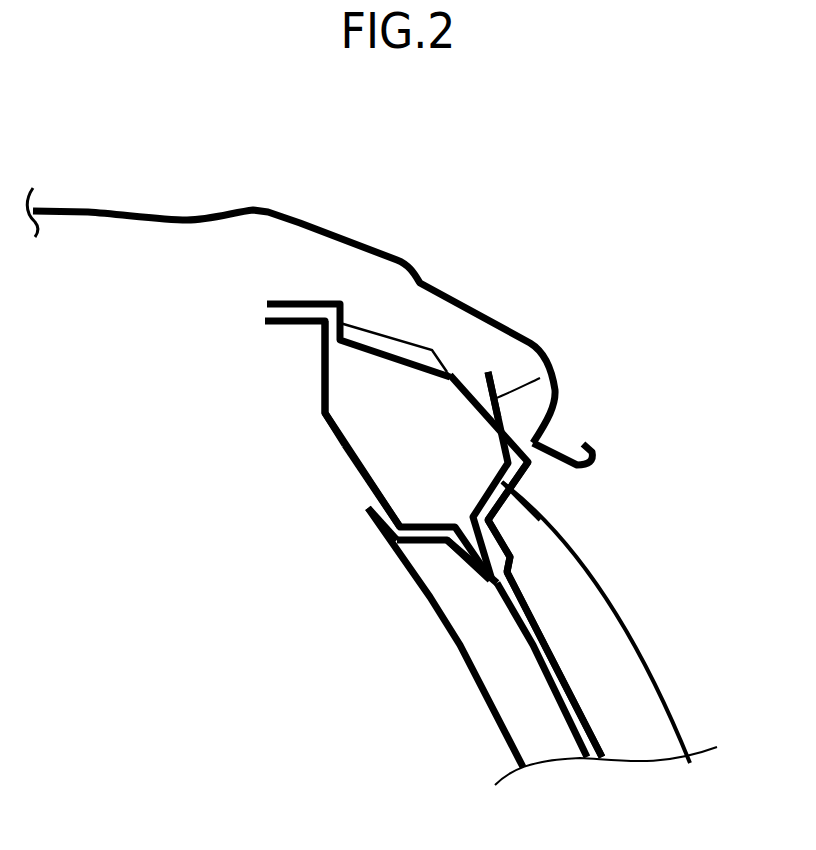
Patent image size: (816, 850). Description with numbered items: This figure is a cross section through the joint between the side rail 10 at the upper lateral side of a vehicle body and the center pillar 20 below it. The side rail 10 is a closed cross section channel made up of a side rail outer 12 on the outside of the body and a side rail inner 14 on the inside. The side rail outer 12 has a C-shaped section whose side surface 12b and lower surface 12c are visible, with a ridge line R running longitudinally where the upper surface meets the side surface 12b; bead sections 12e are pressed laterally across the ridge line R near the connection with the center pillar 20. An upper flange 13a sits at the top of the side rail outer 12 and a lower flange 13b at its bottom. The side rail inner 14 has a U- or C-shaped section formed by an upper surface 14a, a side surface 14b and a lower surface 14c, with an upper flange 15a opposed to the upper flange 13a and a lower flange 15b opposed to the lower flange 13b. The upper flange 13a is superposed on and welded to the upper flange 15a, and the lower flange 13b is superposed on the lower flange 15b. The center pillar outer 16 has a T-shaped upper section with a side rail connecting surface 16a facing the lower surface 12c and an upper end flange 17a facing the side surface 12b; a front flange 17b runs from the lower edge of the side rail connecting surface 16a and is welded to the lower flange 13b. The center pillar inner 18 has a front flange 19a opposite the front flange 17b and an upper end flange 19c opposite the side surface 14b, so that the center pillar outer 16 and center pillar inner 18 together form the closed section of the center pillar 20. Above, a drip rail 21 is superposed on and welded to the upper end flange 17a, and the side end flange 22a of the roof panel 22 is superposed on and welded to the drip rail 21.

The side rail 10 is at (268, 440).
The side rail outer 12 is at (460, 368).
The side surface 12b is at (511, 412).
The lower surface 12c is at (513, 488).
The bead sections 12e is at (363, 337).
The upper flange 13a is at (277, 300).
The lower flange 13b is at (513, 553).
The side rail inner 14 is at (332, 438).
The upper surface 14a is at (322, 400).
The side surface 14b is at (373, 488).
The lower surface 14c is at (447, 540).
The upper flange 15a is at (283, 323).
The lower flange 15b is at (475, 568).
The center pillar outer 16 is at (640, 625).
The side rail connecting surface 16a is at (500, 513).
The upper end flange 17a is at (540, 378).
The front flange 17b is at (580, 700).
The center pillar inner 18 is at (477, 690).
The front flange 19a is at (573, 733).
The upper end flange 19c is at (380, 538).
The center pillar 20 is at (486, 741).
The drip rail 21 is at (488, 372).
The roof panel 22 is at (300, 208).
The side end flange 22a is at (553, 433).
The ridge line R is at (447, 372).